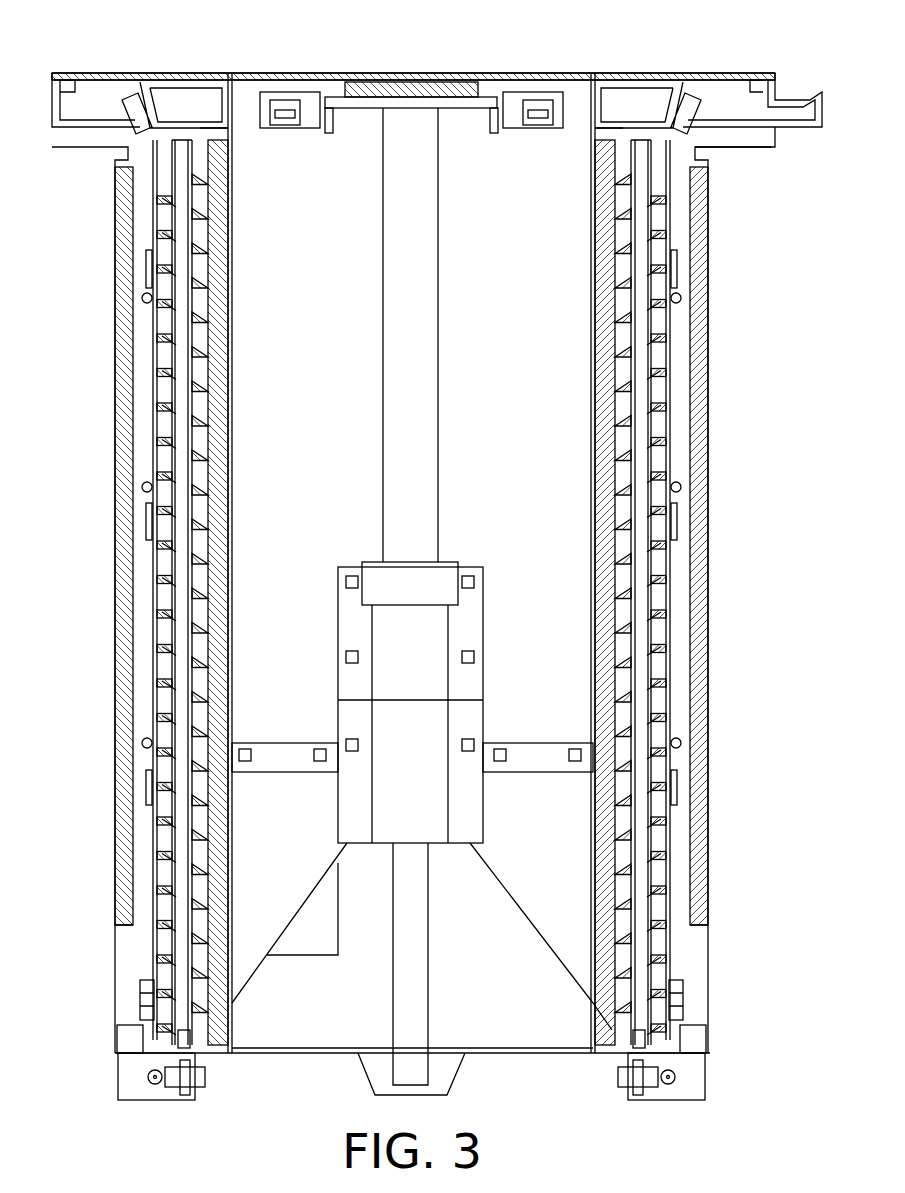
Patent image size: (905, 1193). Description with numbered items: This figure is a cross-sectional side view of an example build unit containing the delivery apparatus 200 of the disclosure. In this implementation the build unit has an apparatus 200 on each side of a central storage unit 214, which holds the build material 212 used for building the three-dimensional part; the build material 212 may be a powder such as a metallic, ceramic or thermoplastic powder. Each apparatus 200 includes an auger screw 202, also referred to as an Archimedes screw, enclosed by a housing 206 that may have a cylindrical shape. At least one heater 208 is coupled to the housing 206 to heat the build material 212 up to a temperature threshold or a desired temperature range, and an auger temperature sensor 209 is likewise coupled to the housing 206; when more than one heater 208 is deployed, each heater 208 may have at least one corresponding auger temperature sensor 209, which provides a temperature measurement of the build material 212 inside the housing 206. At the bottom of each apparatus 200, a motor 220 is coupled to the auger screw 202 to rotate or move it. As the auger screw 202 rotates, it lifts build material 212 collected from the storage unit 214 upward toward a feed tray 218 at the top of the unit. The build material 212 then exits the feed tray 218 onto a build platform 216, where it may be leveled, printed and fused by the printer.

The apparatus 200 is at (115, 338).
The auger screw 202 is at (185, 215).
The housing 206 is at (135, 650).
The heater 208 is at (146, 265).
The auger temperature sensor 209 is at (142, 298).
The build material 212 is at (188, 432).
The storage unit 214 is at (537, 350).
The build platform 216 is at (411, 72).
The feed tray 218 is at (196, 84).
The motor 220 is at (205, 1077).